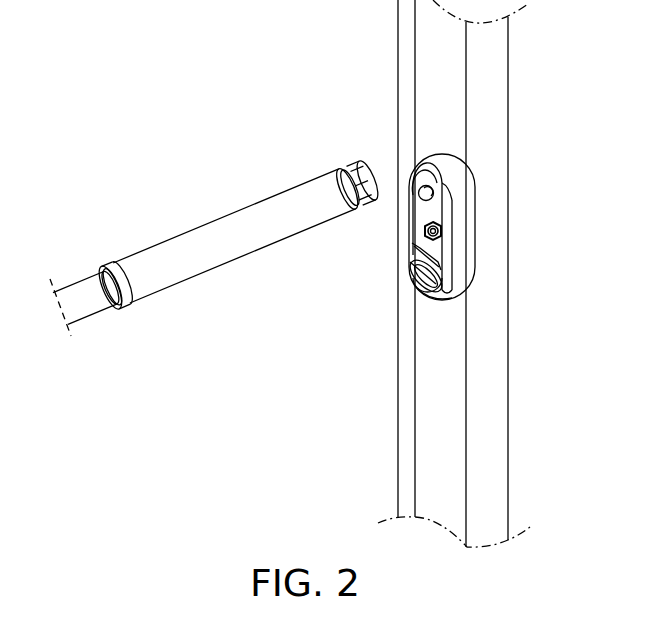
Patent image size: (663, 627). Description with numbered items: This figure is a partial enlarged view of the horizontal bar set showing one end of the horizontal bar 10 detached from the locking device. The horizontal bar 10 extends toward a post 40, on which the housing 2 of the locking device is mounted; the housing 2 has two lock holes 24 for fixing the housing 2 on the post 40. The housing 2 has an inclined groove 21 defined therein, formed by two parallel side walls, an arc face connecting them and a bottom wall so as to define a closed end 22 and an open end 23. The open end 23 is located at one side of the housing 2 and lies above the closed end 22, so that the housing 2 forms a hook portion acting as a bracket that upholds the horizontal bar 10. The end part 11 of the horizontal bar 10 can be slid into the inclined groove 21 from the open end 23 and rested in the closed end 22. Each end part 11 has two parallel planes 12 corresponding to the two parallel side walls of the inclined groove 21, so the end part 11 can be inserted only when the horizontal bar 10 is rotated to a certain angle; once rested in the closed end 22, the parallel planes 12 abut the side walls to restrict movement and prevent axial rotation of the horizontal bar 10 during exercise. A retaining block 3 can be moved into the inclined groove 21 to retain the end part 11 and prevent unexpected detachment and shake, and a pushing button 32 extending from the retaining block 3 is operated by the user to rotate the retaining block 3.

The housing 2 is at (463, 267).
The retaining block 3 is at (413, 239).
The horizontal bar 10 is at (143, 247).
The end part 11 is at (349, 163).
The parallel planes 12 is at (367, 167).
The inclined groove 21 is at (410, 265).
The closed end 22 is at (443, 300).
The open end 23 is at (408, 246).
The lock holes 24 is at (428, 193).
The pushing button 32 is at (440, 228).
The post 40 is at (432, 413).